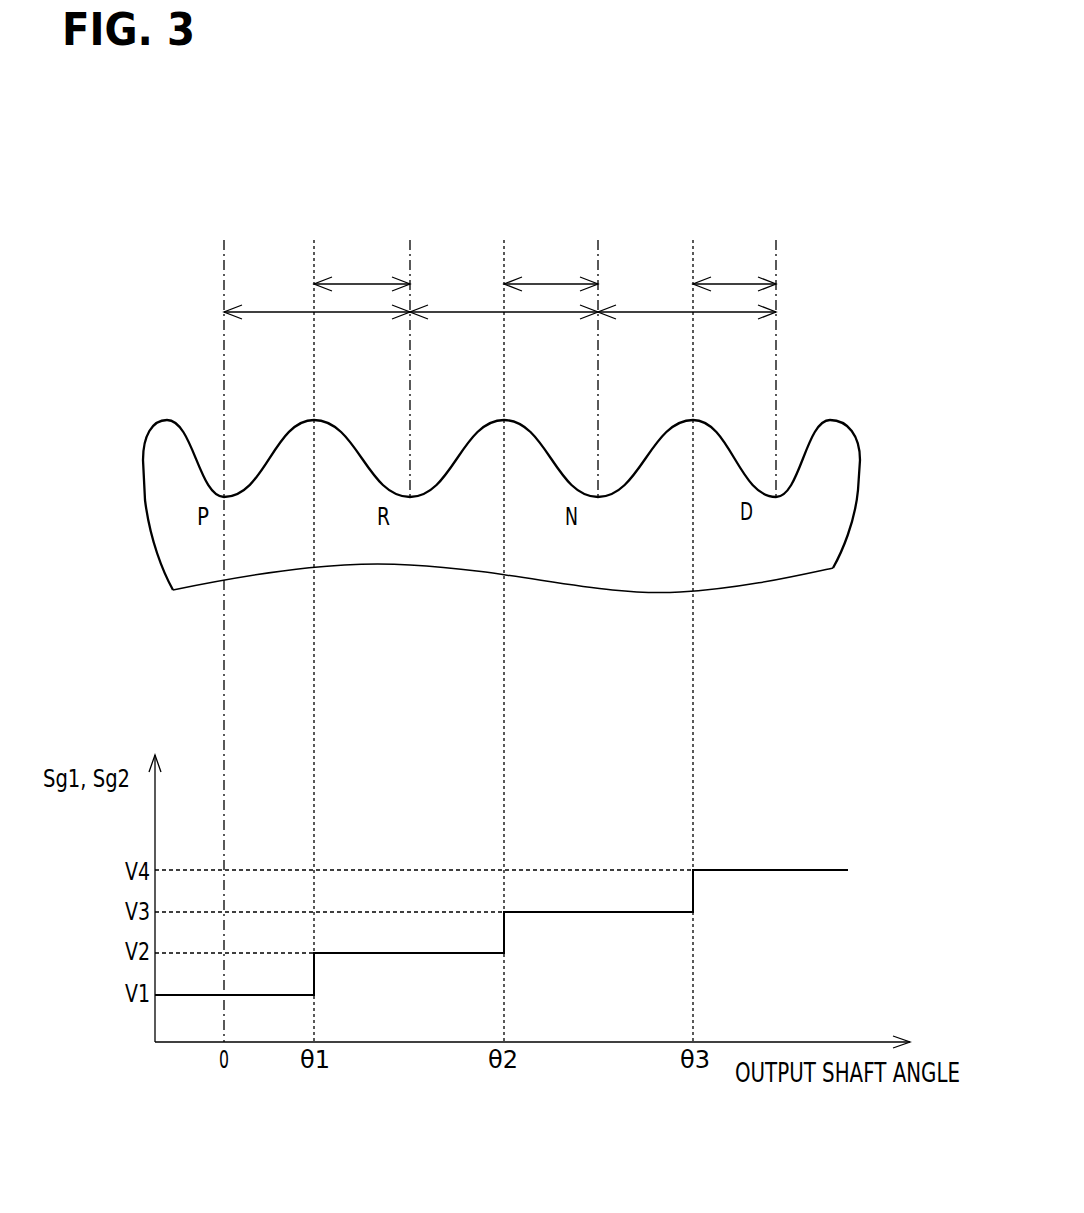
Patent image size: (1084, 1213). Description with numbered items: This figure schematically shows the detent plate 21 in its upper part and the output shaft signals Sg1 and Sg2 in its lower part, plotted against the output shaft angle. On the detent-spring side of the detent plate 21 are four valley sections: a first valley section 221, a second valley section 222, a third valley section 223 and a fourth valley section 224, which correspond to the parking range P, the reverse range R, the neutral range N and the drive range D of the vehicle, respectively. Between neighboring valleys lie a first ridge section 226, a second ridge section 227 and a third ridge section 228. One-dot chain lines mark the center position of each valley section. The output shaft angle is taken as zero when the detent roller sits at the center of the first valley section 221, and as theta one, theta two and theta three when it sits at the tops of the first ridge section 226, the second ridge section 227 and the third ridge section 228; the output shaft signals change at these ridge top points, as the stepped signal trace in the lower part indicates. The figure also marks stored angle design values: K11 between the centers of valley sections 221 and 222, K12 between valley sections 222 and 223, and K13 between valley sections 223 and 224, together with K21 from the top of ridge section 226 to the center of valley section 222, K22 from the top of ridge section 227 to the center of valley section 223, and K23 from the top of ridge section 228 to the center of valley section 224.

The detent plate 21 is at (870, 415).
The first valley section 221 is at (237, 490).
The second valley section 222 is at (428, 490).
The third valley section 223 is at (583, 490).
The fourth valley section 224 is at (765, 490).
The first ridge section 226 is at (312, 420).
The second ridge section 227 is at (502, 420).
The third ridge section 228 is at (691, 420).
The angle design value K11 is at (275, 310).
The angle design value K12 is at (456, 310).
The angle design value K13 is at (644, 310).
The angle design value K21 is at (363, 282).
The second design value K22 is at (557, 282).
The angle design value K23 is at (738, 282).